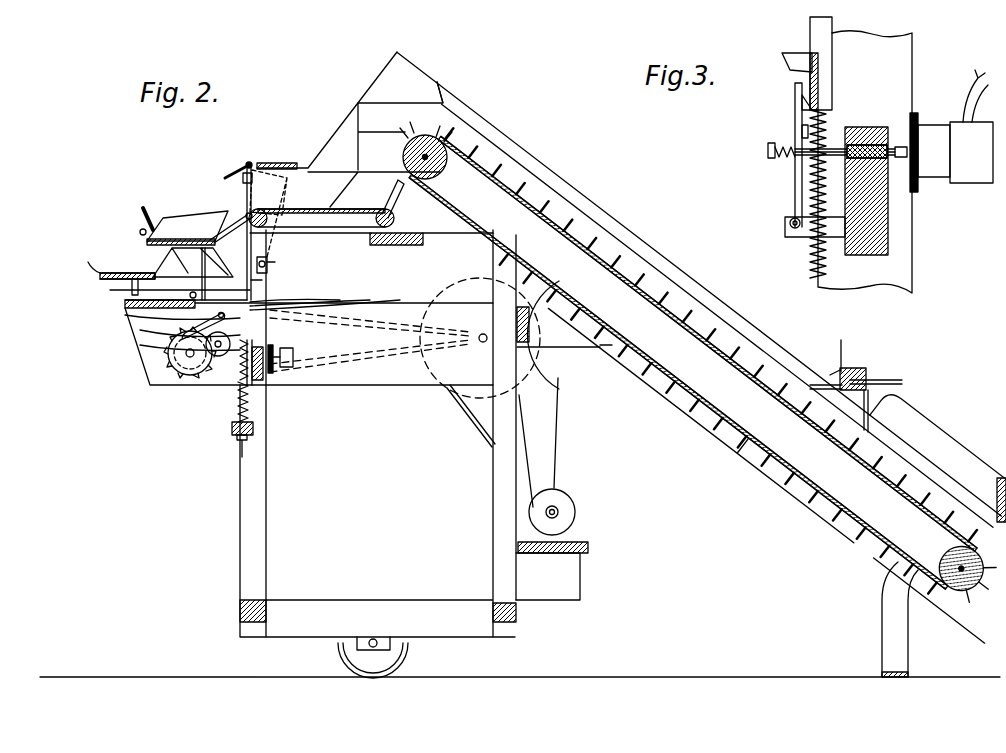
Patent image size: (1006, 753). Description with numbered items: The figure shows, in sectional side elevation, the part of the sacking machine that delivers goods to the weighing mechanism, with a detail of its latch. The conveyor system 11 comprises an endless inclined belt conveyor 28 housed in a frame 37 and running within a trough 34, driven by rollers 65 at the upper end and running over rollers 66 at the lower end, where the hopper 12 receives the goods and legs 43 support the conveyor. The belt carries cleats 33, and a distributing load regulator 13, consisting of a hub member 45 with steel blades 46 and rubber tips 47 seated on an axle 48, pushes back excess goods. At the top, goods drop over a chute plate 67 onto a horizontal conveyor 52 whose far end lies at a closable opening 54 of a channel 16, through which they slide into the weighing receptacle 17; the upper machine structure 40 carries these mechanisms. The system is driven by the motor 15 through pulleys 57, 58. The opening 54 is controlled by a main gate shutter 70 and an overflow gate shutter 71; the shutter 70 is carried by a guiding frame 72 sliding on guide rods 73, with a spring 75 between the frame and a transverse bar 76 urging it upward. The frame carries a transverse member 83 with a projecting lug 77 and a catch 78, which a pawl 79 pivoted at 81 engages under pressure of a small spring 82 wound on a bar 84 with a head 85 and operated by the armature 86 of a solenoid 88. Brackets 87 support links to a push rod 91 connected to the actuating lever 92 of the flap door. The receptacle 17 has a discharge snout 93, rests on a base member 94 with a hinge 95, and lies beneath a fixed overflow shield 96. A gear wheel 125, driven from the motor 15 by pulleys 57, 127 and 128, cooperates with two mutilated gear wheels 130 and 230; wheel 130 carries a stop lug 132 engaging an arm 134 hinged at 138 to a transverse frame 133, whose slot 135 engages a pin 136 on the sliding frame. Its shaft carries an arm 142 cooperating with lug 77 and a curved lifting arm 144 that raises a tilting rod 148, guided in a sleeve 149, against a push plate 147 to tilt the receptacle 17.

In FIG. 2, the conveyor system 11 is at (667, 321).
In FIG. 2, the hopper 12 is at (904, 516).
In FIG. 2, the distributing load regulator 13 is at (853, 372).
In FIG. 2, the motor 15 is at (576, 510).
In FIG. 2, the channel 16 is at (298, 167).
In FIG. 2, the weighing receptacle 17 is at (200, 240).
In FIG. 2, the inclined belt conveyor 28 is at (697, 263).
In FIG. 2, the cleats 33 is at (693, 362).
In FIG. 2, the trough 34 is at (706, 417).
In FIG. 2, the frame 37 is at (691, 360).
In FIG. 2, the main frame 40 is at (505, 497).
In FIG. 2, the legs 43 is at (898, 660).
In FIG. 2, the hub member 45 is at (870, 382).
In FIG. 2, the steel blades 46 is at (870, 378).
In FIG. 2, the rubber tip 47 is at (812, 385).
In FIG. 2, the axle 48 is at (845, 370).
In FIG. 2, the horizontal endless conveyor 52 is at (325, 209).
In FIG. 2, the closable opening 54 is at (245, 183).
In FIG. 2, the pulley 57 is at (538, 365).
In FIG. 2, the pulley 58 is at (606, 342).
In FIG. 2, the rollers 65 is at (424, 135).
In FIG. 2, the rollers 66 is at (965, 572).
In FIG. 2, the chute plate 67 is at (396, 195).
In FIG. 2, the main gate shutter 70 is at (242, 215).
In FIG. 2, the overflow gate shutter 71 is at (232, 175).
In FIG. 2, the guiding frame 72 is at (263, 280).
In FIG. 2, the guide rods 73 is at (238, 405).
In FIG. 3, the guide rods 73 is at (810, 262).
In FIG. 2, the spring 75 is at (255, 425).
In FIG. 3, the spring 75 is at (830, 268).
In FIG. 2, the transverse bar 76 is at (238, 438).
In FIG. 2, the projecting lug 77 is at (262, 335).
In FIG. 3, the projecting lug 77 is at (790, 62).
In FIG. 3, the catch 78 is at (802, 102).
In FIG. 2, the pawl 79 is at (218, 388).
In FIG. 3, the pawl 79 is at (795, 88).
In FIG. 3, the pivot 81 is at (788, 222).
In FIG. 3, the small spring 82 is at (790, 160).
In FIG. 2, the transverse member 83 is at (260, 347).
In FIG. 3, the transverse member 83 is at (832, 55).
In FIG. 3, the bar 84 is at (832, 147).
In FIG. 3, the head 85 is at (768, 152).
In FIG. 2, the armature 86 is at (294, 358).
In FIG. 3, the armature 86 is at (982, 183).
In FIG. 2, the brackets 87 is at (272, 272).
In FIG. 2, the solenoid 88 is at (272, 373).
In FIG. 3, the solenoid 88 is at (935, 178).
In FIG. 2, the push rod 91 is at (286, 190).
In FIG. 2, the actuating lever 92 is at (260, 165).
In FIG. 2, the discharge snout 93 is at (140, 232).
In FIG. 2, the base member 94 is at (175, 268).
In FIG. 2, the hinge 95 is at (160, 243).
In FIG. 2, the overflow shield 96 is at (148, 212).
In FIG. 2, the gear wheel 125 is at (195, 376).
In FIG. 2, the pulley 127 is at (462, 338).
In FIG. 2, the pulley 128 is at (150, 372).
In FIG. 2, the mutilated gear wheel 130 is at (295, 291).
In FIG. 2, the stop lug 132 is at (170, 318).
In FIG. 2, the transverse frame 133 is at (157, 385).
In FIG. 2, the arm 134 is at (310, 293).
In FIG. 2, the slot 135 is at (300, 312).
In FIG. 2, the pin 136 is at (325, 295).
In FIG. 2, the hinge 138 is at (155, 290).
In FIG. 2, the arm 142 is at (180, 345).
In FIG. 2, the curved lifting arm 144 is at (175, 332).
In FIG. 2, the push plate 147 is at (267, 258).
In FIG. 2, the tilting rod 148 is at (128, 283).
In FIG. 2, the guide sleeve 149 is at (121, 274).
In FIG. 2, the mutilated gear wheel 230 is at (175, 357).